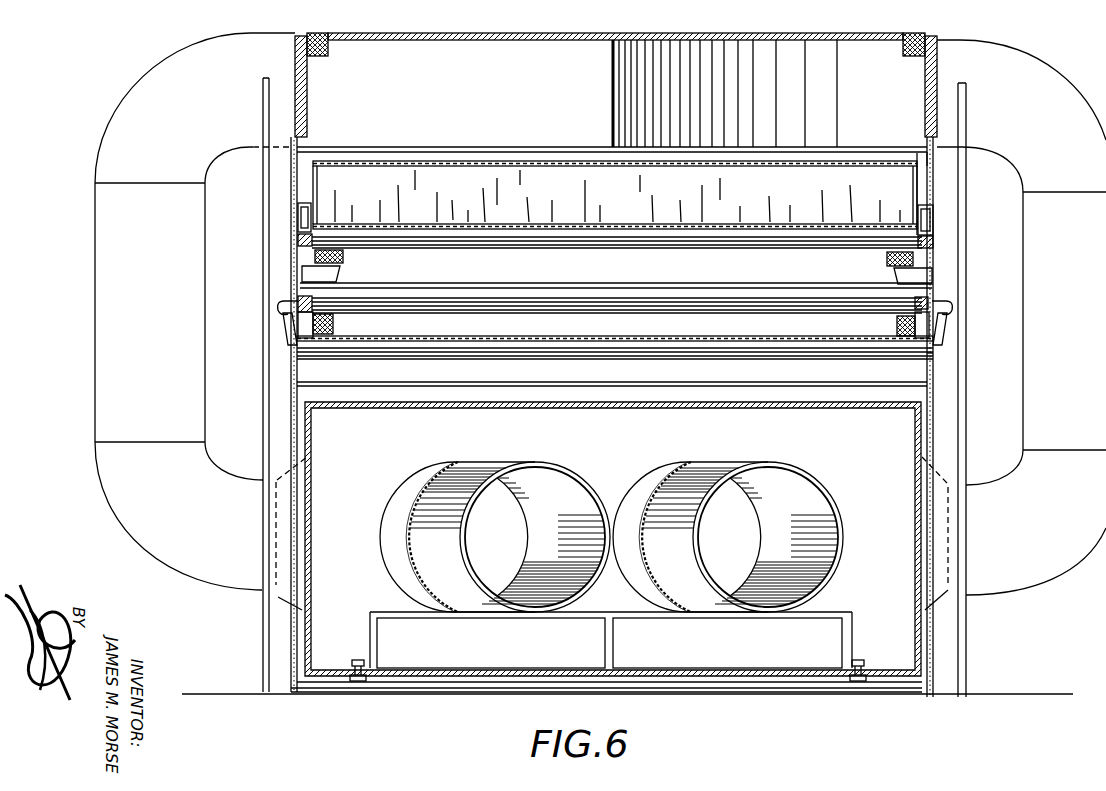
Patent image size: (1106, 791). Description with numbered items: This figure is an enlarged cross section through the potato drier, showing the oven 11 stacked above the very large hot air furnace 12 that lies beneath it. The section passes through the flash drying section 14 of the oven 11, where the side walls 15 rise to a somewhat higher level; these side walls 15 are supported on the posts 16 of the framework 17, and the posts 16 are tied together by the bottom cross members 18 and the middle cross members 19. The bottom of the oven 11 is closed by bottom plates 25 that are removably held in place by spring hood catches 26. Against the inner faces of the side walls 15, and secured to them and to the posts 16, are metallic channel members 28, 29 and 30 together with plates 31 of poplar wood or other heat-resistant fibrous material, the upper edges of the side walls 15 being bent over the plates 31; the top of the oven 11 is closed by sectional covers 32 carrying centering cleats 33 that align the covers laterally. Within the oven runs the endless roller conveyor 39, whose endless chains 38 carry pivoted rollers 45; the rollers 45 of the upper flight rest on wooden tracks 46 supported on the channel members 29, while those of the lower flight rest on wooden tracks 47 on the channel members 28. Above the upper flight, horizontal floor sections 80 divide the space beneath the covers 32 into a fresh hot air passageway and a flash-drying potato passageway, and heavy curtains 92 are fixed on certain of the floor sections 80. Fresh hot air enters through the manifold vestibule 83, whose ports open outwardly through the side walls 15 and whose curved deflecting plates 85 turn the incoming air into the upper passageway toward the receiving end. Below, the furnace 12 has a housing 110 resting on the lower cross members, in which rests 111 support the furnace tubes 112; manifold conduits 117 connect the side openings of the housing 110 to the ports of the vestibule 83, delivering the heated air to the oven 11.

The oven 11 is at (322, 192).
The hot air furnace 12 is at (937, 437).
The flash drying section 14 is at (546, 175).
The side walls 15 is at (297, 192).
The posts 16 is at (264, 386).
The framework 17 is at (257, 361).
The bottom cross members 18 is at (925, 688).
The middle cross members 19 is at (893, 380).
The bottom plates 25 is at (730, 338).
The spring hood catches 26 is at (278, 330).
The channel member 28 is at (278, 312).
The channel member 29 is at (341, 280).
The channel member 30 is at (298, 213).
The plates 31 is at (296, 56).
The sectional covers 32 is at (805, 46).
The centering cleats 33 is at (325, 36).
The endless chains 38 is at (297, 238).
The endless roller conveyor 39 is at (729, 289).
The rollers 45 is at (606, 288).
The wooden tracks 46 is at (343, 258).
The wooden tracks 47 is at (333, 322).
The floor sections 80 is at (479, 140).
The manifold vestibule 83 is at (584, 62).
The curved deflecting plates 85 is at (548, 66).
The curtains 92 is at (590, 182).
The furnace housing 110 is at (920, 640).
The rests 111 is at (845, 615).
The furnace tubes 112 is at (527, 470).
The manifold conduits 117 is at (97, 290).